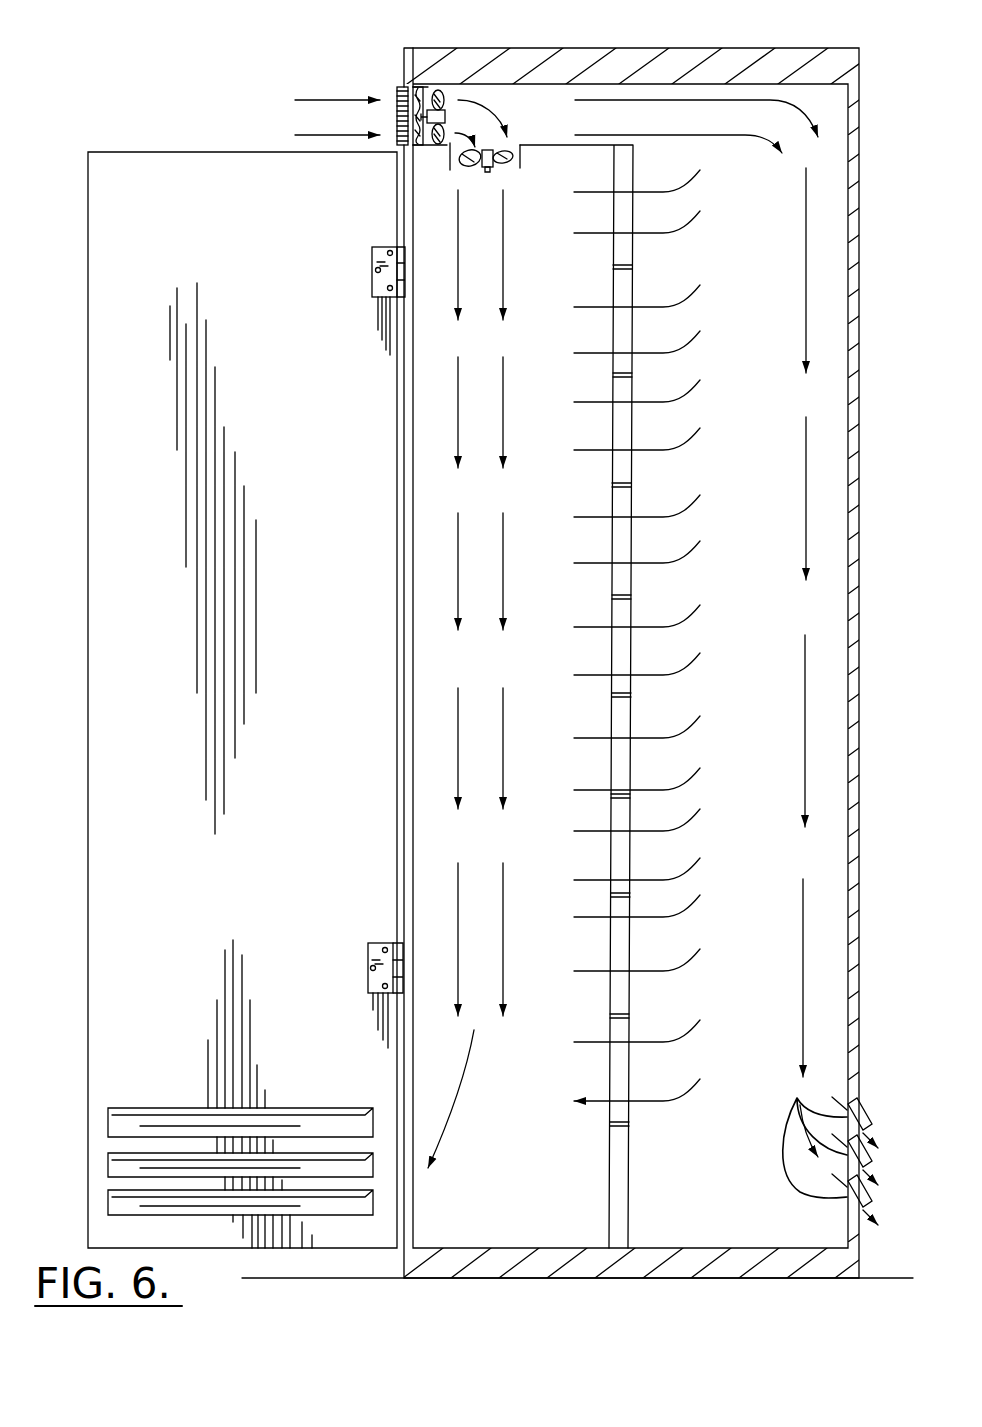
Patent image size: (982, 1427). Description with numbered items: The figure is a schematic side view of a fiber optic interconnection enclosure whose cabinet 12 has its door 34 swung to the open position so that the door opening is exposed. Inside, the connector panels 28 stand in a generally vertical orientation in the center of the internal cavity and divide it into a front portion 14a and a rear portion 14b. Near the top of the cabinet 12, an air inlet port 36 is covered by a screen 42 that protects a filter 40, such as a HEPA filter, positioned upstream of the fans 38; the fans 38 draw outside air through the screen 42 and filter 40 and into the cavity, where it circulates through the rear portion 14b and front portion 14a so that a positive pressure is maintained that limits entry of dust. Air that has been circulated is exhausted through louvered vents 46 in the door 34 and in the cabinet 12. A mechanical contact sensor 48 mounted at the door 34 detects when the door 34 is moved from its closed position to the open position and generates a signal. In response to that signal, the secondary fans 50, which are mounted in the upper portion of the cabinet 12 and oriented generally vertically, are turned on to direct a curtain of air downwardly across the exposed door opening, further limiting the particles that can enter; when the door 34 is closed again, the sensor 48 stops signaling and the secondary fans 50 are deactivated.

The cabinet 12 is at (712, 63).
The door 34 is at (232, 178).
The mechanical contact sensor 48 is at (380, 277).
The screen 42 is at (397, 98).
The filter 40 is at (418, 97).
The fans 38 is at (438, 96).
The air inlet port 36 is at (447, 108).
The secondary fans 50 is at (500, 158).
The connector panels 28 is at (628, 545).
The rear portion 14b is at (780, 314).
The front portion 14a is at (548, 1153).
The vents 46 is at (182, 1168).